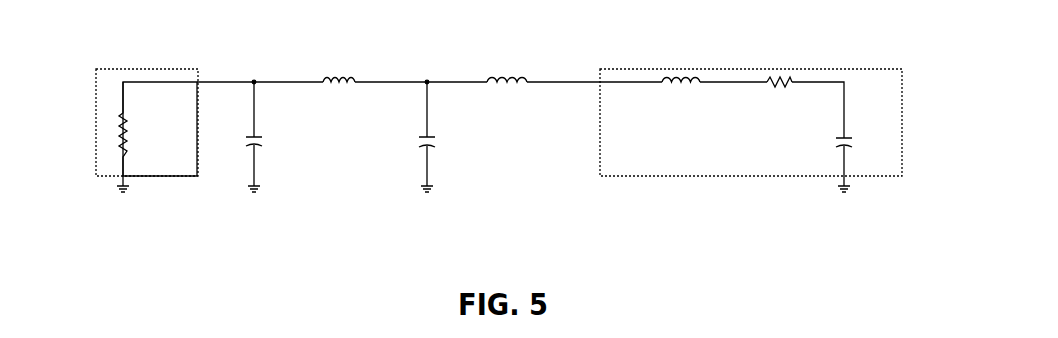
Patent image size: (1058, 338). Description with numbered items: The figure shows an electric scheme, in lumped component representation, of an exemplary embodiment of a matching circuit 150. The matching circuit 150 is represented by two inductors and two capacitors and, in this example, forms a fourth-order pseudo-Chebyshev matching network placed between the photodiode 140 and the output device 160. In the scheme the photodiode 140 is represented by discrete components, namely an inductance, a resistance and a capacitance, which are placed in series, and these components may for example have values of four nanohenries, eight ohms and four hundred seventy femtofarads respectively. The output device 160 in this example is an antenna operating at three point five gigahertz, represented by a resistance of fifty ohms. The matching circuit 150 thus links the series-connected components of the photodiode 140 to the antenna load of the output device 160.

The photodiode 140 is at (687, 177).
The matching circuit 150 is at (251, 51).
The output device 160 is at (173, 178).